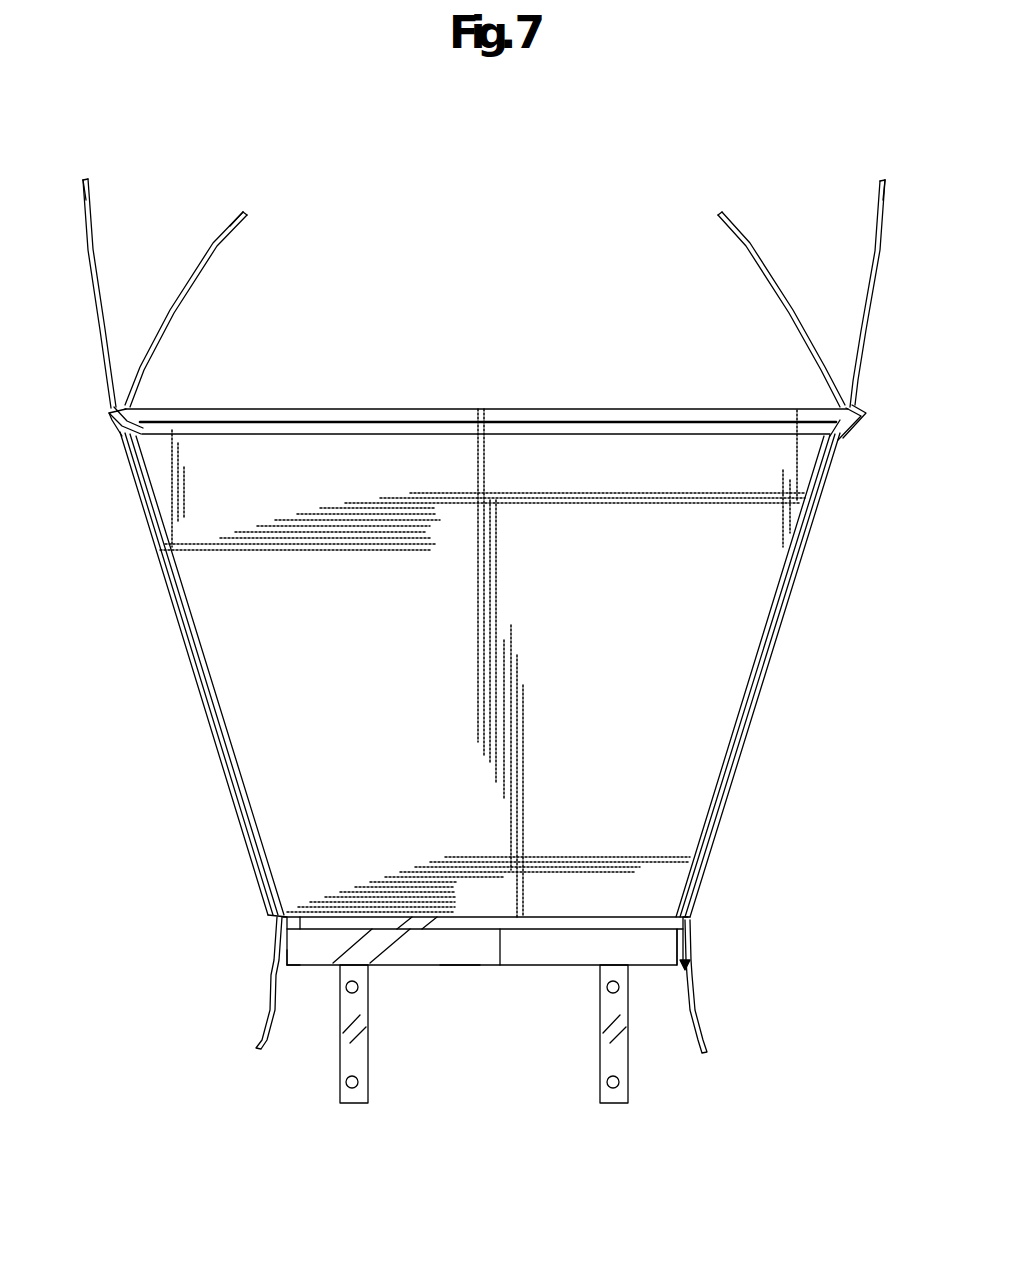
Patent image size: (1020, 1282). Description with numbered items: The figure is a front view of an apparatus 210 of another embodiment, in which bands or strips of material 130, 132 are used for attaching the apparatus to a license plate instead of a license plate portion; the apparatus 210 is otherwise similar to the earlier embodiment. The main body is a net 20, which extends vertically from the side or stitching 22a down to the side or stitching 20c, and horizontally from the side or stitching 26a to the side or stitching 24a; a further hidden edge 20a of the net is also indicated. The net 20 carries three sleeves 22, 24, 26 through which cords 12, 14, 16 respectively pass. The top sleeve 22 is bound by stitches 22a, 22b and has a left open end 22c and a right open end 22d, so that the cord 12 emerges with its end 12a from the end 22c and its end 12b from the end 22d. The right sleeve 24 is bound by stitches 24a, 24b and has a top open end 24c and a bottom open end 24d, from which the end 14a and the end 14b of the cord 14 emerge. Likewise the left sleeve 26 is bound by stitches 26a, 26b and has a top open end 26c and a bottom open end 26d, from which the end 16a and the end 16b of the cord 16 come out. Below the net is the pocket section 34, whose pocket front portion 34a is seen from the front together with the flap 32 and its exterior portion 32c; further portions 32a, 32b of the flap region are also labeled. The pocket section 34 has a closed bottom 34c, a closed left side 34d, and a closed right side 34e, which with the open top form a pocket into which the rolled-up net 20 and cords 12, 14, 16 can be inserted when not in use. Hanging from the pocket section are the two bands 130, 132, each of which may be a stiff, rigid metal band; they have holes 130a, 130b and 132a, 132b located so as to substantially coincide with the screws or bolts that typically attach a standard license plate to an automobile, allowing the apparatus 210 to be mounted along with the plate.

The apparatus 210 is at (637, 166).
The cord 12 is at (213, 243).
The end of cord 12 12a is at (250, 208).
The end of cord 12 12b is at (722, 210).
The cord 14 is at (870, 245).
The end of cord 14 14a is at (885, 178).
The end of cord 14 14b is at (706, 1053).
The cord 16 is at (100, 215).
The end of cord 16 16a is at (86, 168).
The end of cord 16 16b is at (256, 1048).
The net 20 is at (530, 710).
The rear panel hidden edge 20a is at (530, 778).
The side or stitching of the net 20c is at (540, 917).
The sleeve 22 is at (445, 418).
The side or stitching 22a is at (515, 405).
The stitching 22b is at (555, 435).
The left open end of sleeve 22 22c is at (115, 412).
The right open end of sleeve 22 22d is at (845, 430).
The sleeve 24 is at (810, 535).
The side or stitching 24a is at (825, 495).
The stitching 24b is at (775, 600).
The top open end of sleeve 24 24c is at (852, 412).
The bottom open end of sleeve 24 24d is at (690, 917).
The sleeve 26 is at (195, 660).
The side or stitching 26a is at (180, 620).
The stitching 26b is at (200, 628).
The top open end of sleeve 26 26c is at (120, 438).
The bottom open end of sleeve 26 26d is at (278, 917).
The flap 32 is at (665, 925).
The bottom rim lower band 32a is at (605, 933).
The bottom rim upper band 32b is at (615, 917).
The exterior portion of the flap 32c is at (315, 922).
The pocket section 34 is at (688, 962).
The pocket front portion 34a is at (515, 950).
The closed bottom of the pocket section 34c is at (465, 965).
The closed left side of the pocket section 34d is at (285, 962).
The closed right side of the pocket section 34e is at (690, 950).
The band or strip of material 130 is at (342, 1053).
The hole of band 130 130a is at (358, 990).
The hole of band 130 130b is at (358, 1085).
The band or strip of material 132 is at (612, 1055).
The hole of band 132 132a is at (618, 992).
The hole of band 132 132b is at (620, 1085).